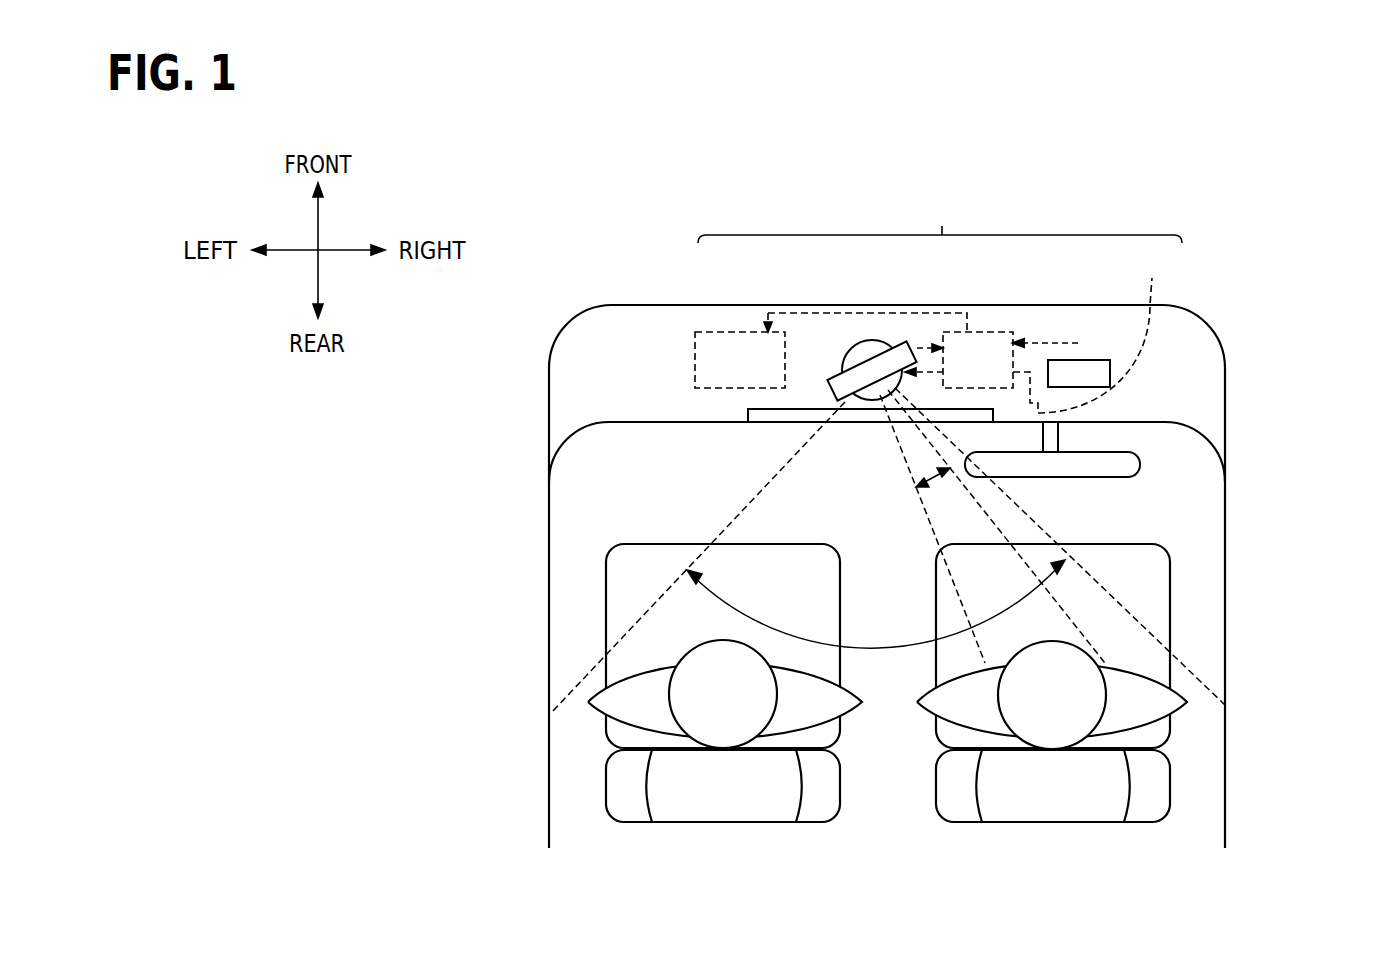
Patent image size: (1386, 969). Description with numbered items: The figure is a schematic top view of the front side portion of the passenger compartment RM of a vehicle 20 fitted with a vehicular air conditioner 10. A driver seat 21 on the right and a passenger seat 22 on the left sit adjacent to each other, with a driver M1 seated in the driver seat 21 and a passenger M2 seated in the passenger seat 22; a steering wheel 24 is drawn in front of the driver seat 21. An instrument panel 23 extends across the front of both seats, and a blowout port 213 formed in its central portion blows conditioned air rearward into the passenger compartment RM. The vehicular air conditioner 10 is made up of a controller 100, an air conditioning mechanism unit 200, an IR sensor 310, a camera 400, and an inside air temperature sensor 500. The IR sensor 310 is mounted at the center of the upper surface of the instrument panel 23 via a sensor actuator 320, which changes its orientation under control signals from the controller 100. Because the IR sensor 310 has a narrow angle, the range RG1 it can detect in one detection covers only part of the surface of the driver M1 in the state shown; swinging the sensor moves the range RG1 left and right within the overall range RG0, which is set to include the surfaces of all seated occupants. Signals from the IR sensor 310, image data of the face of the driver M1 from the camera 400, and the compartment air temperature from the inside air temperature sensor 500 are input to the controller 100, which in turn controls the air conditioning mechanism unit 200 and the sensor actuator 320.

The vehicular air conditioner 10 is at (940, 221).
The vehicle 20 is at (1225, 608).
The driver seat 21 is at (1053, 798).
The passenger seat 22 is at (725, 798).
The instrument panel 23 is at (1203, 366).
The steering wheel 24 is at (1115, 478).
The controller 100 is at (980, 330).
The air conditioning mechanism unit 200 is at (730, 330).
The blowout port 213 is at (762, 423).
The IR sensor 310 is at (892, 343).
The sensor actuator 320 is at (852, 342).
The camera 400 is at (1083, 360).
The inside air temperature sensor 500 is at (1096, 330).
The passenger compartment RM is at (1197, 530).
The entire detectable range RG0 is at (877, 640).
The single-detection range RG1 is at (932, 470).
The driver M1 is at (1172, 700).
The passenger M2 is at (597, 703).